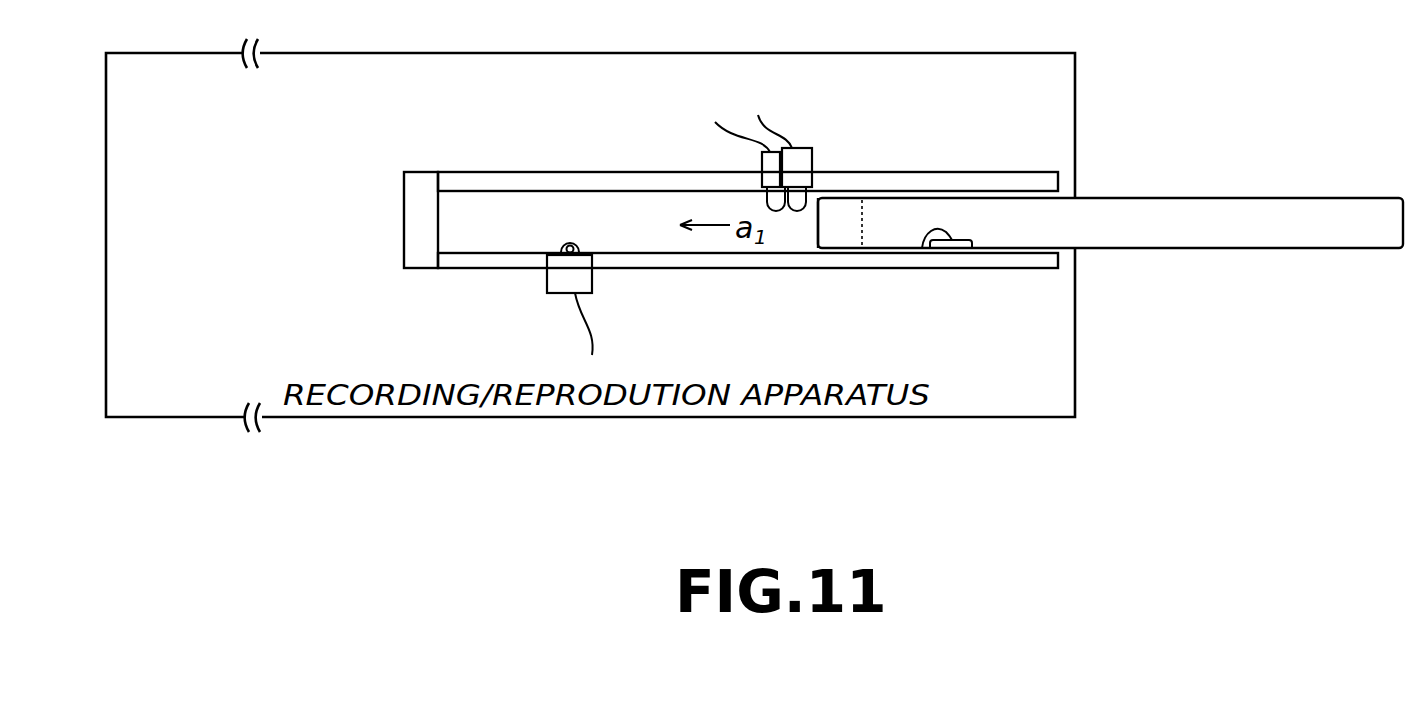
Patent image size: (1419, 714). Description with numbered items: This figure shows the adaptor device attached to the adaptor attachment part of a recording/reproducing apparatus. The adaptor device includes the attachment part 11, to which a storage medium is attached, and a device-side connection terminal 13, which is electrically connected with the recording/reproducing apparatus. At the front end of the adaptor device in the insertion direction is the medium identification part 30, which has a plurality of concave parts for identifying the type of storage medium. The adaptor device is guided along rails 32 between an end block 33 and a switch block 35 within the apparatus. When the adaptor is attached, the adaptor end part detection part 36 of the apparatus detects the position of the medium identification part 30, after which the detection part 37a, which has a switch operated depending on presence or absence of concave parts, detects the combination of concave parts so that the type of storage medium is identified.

The attachment part 11 is at (1245, 208).
The device-side connection terminal 13 is at (918, 243).
The medium identification part 30 is at (838, 227).
The guide rails 32 is at (998, 182).
The end block 33 is at (404, 217).
The sensor / switch 35 is at (547, 285).
The adaptor end part detection part 36 is at (760, 161).
The detection part 37a is at (803, 162).